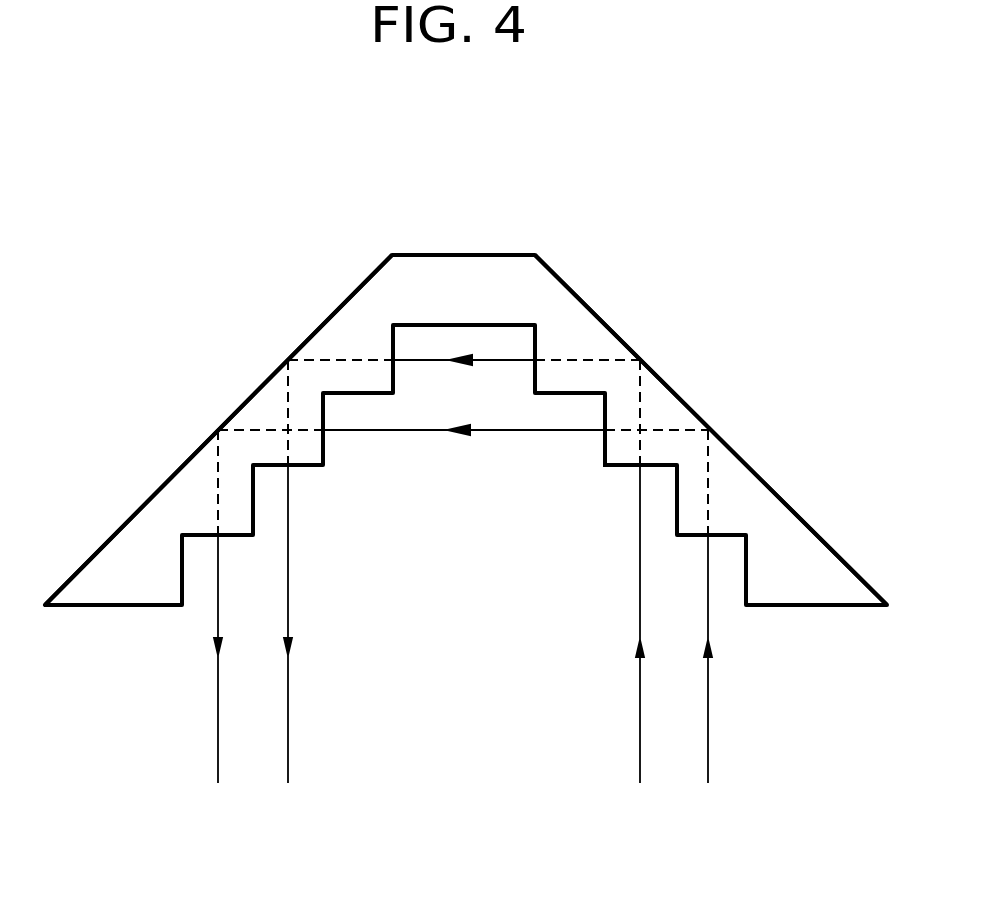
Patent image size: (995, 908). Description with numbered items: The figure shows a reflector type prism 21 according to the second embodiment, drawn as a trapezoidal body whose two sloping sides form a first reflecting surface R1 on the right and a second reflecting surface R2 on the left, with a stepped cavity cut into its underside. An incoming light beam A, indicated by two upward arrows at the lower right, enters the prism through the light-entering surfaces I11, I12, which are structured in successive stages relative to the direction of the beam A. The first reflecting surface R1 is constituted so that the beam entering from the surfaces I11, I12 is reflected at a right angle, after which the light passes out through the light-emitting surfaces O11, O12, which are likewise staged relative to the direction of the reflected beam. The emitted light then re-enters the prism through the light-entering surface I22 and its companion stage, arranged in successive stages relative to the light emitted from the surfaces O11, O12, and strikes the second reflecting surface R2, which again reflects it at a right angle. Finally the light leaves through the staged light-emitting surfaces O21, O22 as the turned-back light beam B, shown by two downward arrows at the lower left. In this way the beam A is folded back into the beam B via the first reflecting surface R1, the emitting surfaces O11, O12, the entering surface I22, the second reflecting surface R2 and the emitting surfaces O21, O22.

The reflector type prism 21 is at (462, 253).
The first reflecting surface R1 is at (613, 330).
The second reflecting surface R2 is at (326, 321).
The light-emitting surface O12 is at (531, 377).
The light-entering surface I12 is at (394, 372).
The light-entering surface I22 is at (326, 450).
The light-emitting surface O11 is at (602, 450).
The light-emitting surface O21 is at (310, 471).
The light-emitting surface O22 is at (235, 538).
The light-entering surface I11 is at (690, 538).
The light beam A is at (674, 657).
The light beam B is at (253, 657).